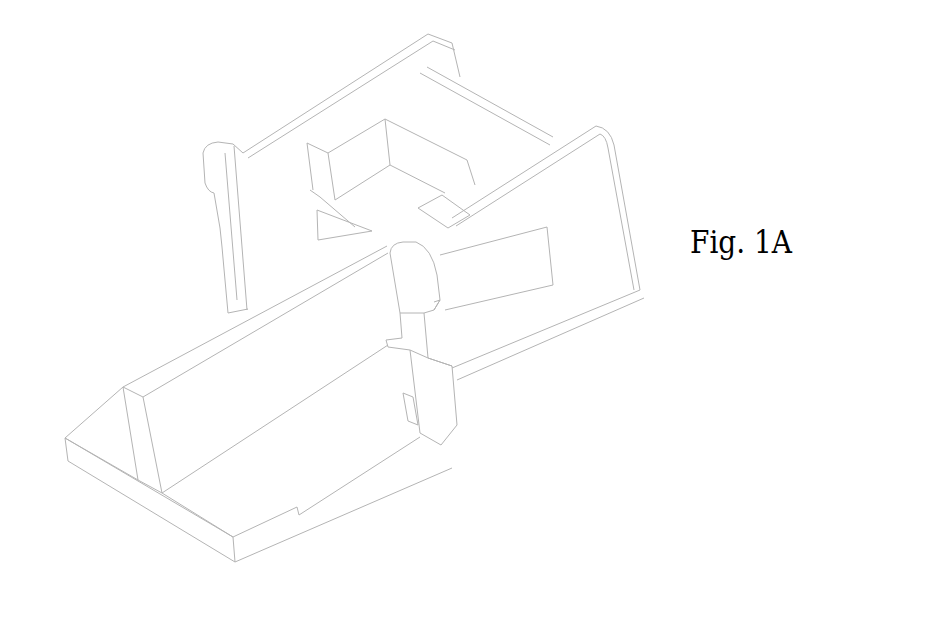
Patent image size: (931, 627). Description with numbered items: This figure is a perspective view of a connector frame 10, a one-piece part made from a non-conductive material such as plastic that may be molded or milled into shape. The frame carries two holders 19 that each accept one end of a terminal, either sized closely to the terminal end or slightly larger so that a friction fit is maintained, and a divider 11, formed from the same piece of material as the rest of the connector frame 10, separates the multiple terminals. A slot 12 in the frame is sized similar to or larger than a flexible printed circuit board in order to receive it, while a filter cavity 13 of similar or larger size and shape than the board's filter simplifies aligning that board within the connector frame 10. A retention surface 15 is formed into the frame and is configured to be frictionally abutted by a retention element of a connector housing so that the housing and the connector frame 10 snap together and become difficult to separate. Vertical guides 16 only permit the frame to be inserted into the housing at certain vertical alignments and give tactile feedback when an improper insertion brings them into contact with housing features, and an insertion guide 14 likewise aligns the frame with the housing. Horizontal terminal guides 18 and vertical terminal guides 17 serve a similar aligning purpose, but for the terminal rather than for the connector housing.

The connector frame 10 is at (167, 118).
The divider 11 is at (137, 378).
The slot 12 is at (317, 193).
The filter cavity 13 is at (420, 139).
The insertion guide 14 is at (298, 518).
The retention surface 15 is at (556, 256).
The vertical guides 16 is at (438, 307).
The vertical terminal guides 17 is at (390, 343).
The horizontal terminal guides 18 is at (408, 398).
The holders 19 is at (320, 237).